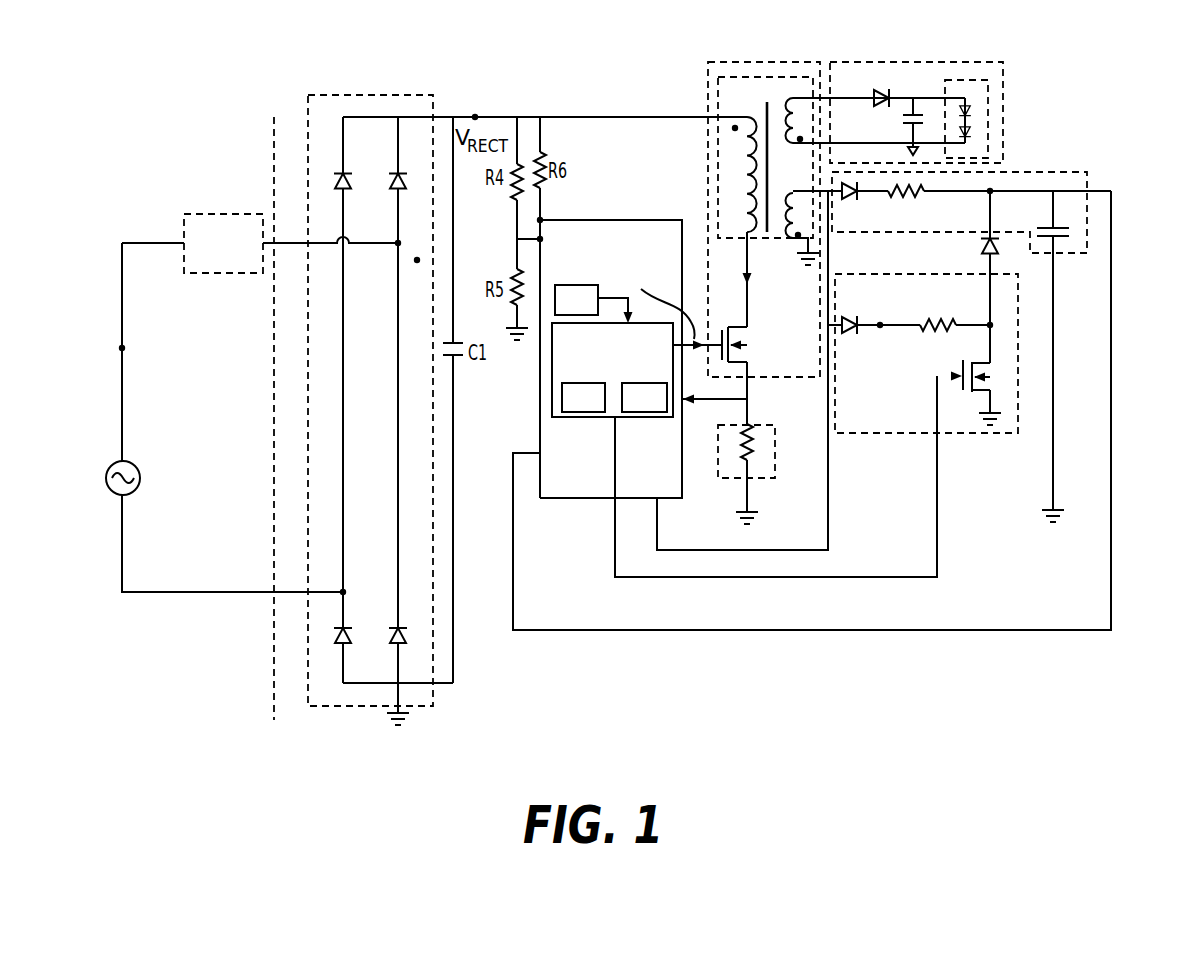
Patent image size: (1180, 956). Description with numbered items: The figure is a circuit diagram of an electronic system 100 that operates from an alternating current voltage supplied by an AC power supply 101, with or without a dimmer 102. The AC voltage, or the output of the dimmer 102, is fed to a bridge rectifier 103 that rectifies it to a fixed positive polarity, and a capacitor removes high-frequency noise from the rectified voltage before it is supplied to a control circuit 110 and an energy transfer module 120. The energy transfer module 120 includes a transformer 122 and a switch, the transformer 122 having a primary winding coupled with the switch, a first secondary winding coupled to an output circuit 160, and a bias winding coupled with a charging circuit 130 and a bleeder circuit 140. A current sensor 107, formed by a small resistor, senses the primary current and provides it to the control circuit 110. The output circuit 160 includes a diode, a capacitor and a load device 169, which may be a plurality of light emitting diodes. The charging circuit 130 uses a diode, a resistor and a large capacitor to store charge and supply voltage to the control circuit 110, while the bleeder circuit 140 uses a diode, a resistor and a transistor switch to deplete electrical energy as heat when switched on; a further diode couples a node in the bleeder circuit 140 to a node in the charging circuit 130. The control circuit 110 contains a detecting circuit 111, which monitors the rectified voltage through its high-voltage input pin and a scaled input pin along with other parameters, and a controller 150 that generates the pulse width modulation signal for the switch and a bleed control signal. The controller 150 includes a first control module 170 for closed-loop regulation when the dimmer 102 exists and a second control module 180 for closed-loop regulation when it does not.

The electronic system 100 is at (886, 668).
The AC power supply 101 is at (112, 497).
The dimmer 102 is at (236, 266).
The rectifier 103 is at (340, 93).
The current sensor 107 is at (777, 460).
The control circuit 110 is at (617, 339).
The detecting circuit 111 is at (594, 304).
The energy transfer module 120 is at (836, 219).
The transformer 122 is at (780, 73).
The charging circuit 130 is at (1093, 172).
The bleeder circuit 140 is at (1020, 318).
The controller 150 is at (628, 374).
The output circuit 160 is at (940, 88).
The load device 169 is at (1012, 86).
The first control module 170 is at (583, 397).
The second control module 180 is at (644, 397).